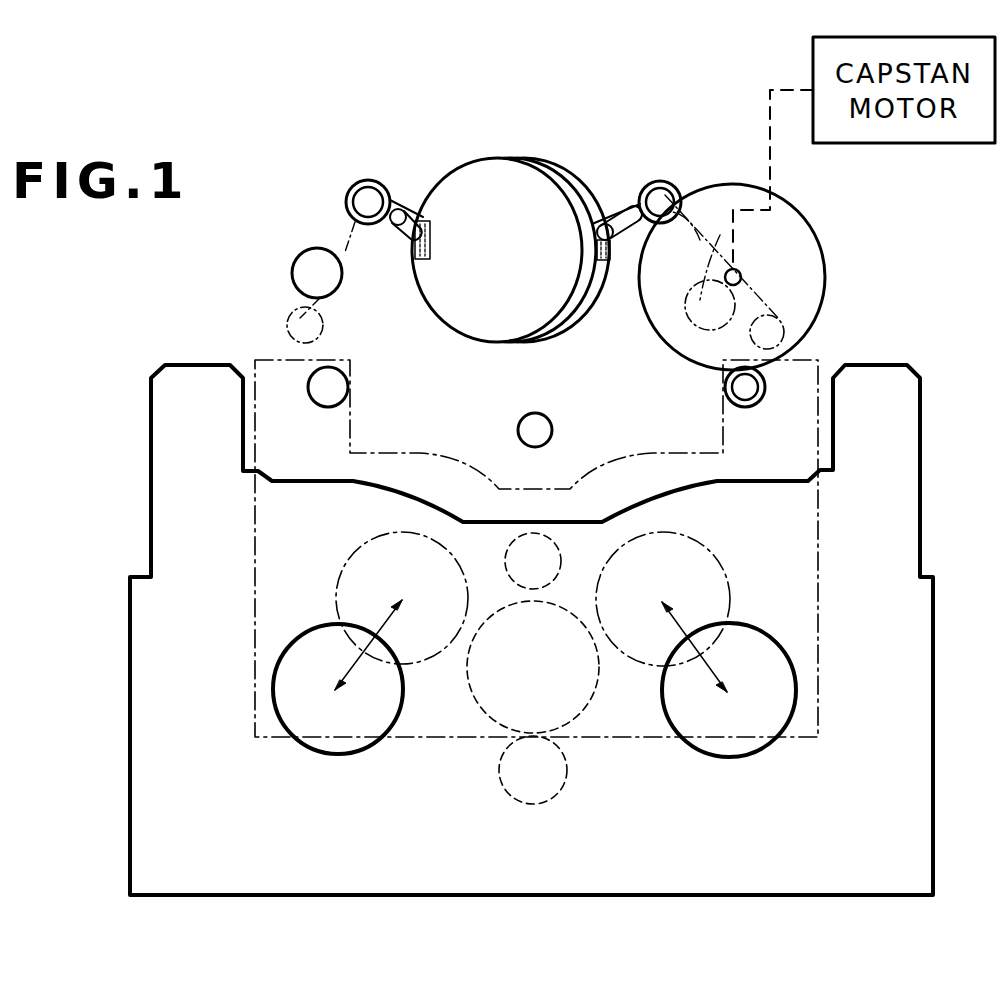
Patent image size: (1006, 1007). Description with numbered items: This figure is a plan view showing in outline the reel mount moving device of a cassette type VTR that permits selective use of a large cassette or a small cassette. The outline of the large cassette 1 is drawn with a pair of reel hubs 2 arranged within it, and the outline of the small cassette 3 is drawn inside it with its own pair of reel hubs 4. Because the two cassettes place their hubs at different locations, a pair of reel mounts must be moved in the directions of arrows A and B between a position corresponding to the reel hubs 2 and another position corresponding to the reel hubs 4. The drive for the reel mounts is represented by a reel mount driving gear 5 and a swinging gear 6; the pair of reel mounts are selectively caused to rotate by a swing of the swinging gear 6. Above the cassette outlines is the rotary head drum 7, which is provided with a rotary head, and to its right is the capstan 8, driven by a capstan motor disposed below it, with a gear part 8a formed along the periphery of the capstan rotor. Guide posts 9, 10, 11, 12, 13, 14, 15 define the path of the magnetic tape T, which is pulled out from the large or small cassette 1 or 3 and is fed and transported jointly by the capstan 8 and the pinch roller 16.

The large cassette 1 is at (130, 715).
The reel hubs 2 is at (338, 755).
The small cassette 3 is at (255, 610).
The reel hubs 4 is at (341, 573).
The reel mount driving gear 5 is at (558, 762).
The swinging gear 6 is at (597, 680).
The rotary head drum 7 is at (478, 344).
The capstan 8 is at (741, 271).
The gear part 8a is at (825, 259).
The guide post 9 is at (288, 323).
The guide post 10 is at (292, 265).
The guide post 11 is at (348, 192).
The guide post 12 is at (398, 228).
The guide post 13 is at (617, 206).
The guide post 14 is at (657, 180).
The guide post 15 is at (792, 320).
The pinch roller 16 is at (687, 308).
The magnetic tape T is at (706, 232).
The arrow A is at (710, 662).
The arrow B is at (352, 665).